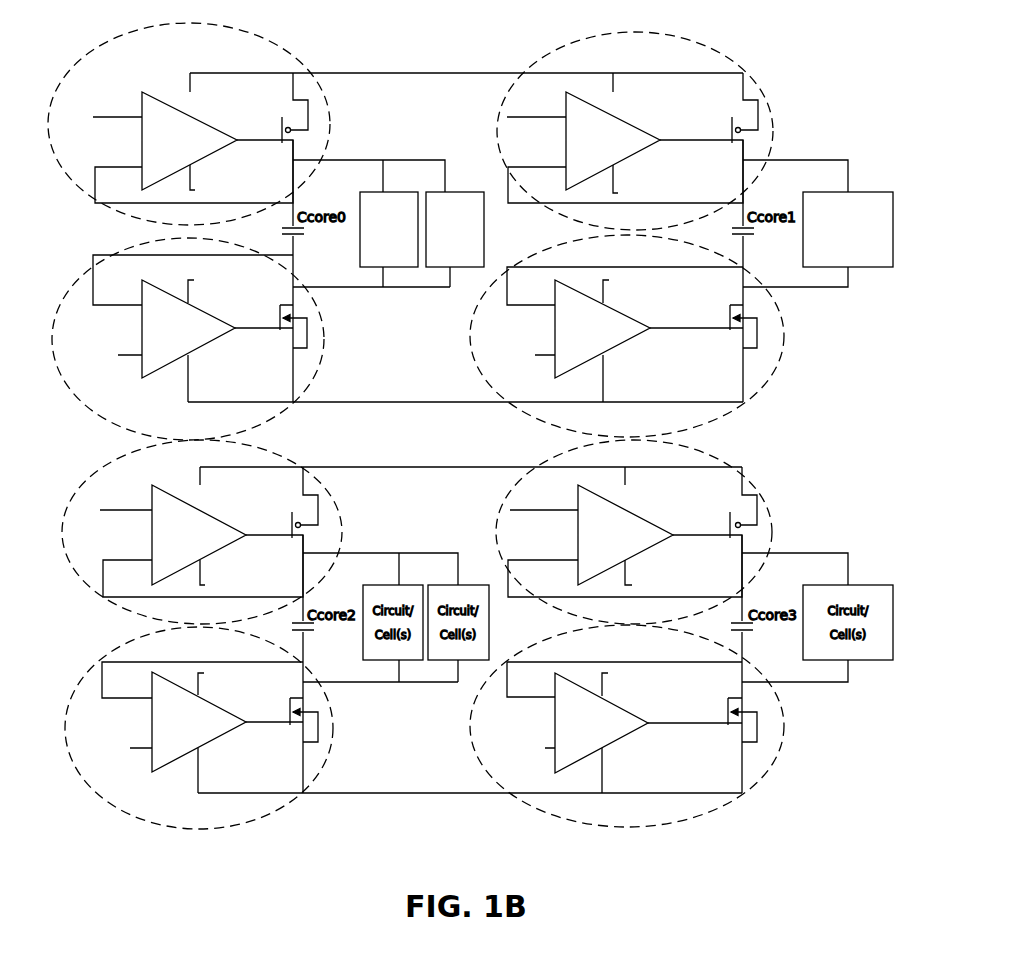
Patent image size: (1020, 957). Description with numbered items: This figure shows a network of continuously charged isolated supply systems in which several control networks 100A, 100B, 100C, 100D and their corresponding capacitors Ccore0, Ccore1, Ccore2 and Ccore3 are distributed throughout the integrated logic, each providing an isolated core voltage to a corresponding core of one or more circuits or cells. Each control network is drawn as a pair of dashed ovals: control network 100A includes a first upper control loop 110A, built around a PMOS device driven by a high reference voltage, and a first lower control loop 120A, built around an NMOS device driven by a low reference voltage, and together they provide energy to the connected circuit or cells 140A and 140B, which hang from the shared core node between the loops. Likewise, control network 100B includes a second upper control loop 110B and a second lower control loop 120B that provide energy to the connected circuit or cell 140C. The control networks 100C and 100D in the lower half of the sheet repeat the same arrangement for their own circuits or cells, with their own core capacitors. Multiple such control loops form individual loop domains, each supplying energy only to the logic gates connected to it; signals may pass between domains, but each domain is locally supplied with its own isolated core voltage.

The control network 100A is at (220, 231).
The control network 100B is at (632, 234).
The control network 100C is at (196, 634).
The control network 100D is at (666, 633).
The first upper control loop 110A is at (283, 58).
The second upper control loop 110B is at (751, 82).
The first lower control loop 120A is at (320, 368).
The second lower control loop 120B is at (470, 358).
The circuit or cell 140A is at (402, 192).
The circuit or cell 140B is at (462, 192).
The circuit or cell 140C is at (866, 192).